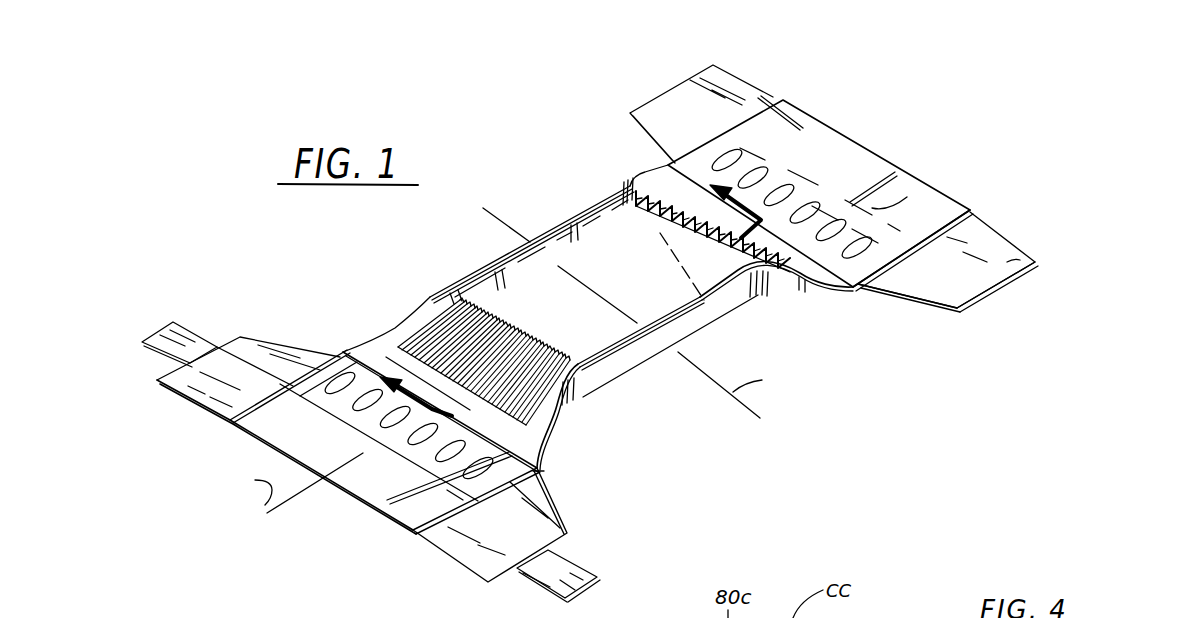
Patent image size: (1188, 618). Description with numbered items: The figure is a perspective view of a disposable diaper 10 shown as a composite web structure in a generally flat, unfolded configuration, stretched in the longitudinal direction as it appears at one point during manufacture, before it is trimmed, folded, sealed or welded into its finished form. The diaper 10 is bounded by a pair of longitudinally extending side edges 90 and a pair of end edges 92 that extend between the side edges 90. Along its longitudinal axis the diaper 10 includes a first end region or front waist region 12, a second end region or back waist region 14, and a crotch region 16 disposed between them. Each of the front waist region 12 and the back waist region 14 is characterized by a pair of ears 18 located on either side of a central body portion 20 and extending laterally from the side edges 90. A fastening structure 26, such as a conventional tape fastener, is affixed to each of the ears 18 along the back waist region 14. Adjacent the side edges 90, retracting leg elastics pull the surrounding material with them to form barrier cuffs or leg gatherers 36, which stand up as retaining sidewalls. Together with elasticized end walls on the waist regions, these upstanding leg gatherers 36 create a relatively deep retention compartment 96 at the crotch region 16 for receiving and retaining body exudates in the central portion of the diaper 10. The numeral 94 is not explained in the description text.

The diaper 10 is at (970, 345).
The front waist region 12 is at (920, 127).
The back waist region 14 is at (287, 338).
The crotch region 16 is at (588, 232).
The ears 18 is at (730, 90).
The central body portion 20 is at (874, 210).
The fastening structure 26 is at (190, 335).
The leg gatherers 36 is at (637, 343).
The side edges 90 is at (758, 295).
The end edges 92 is at (812, 118).
The plate edge 94 is at (883, 273).
The retention compartment 96 is at (646, 288).